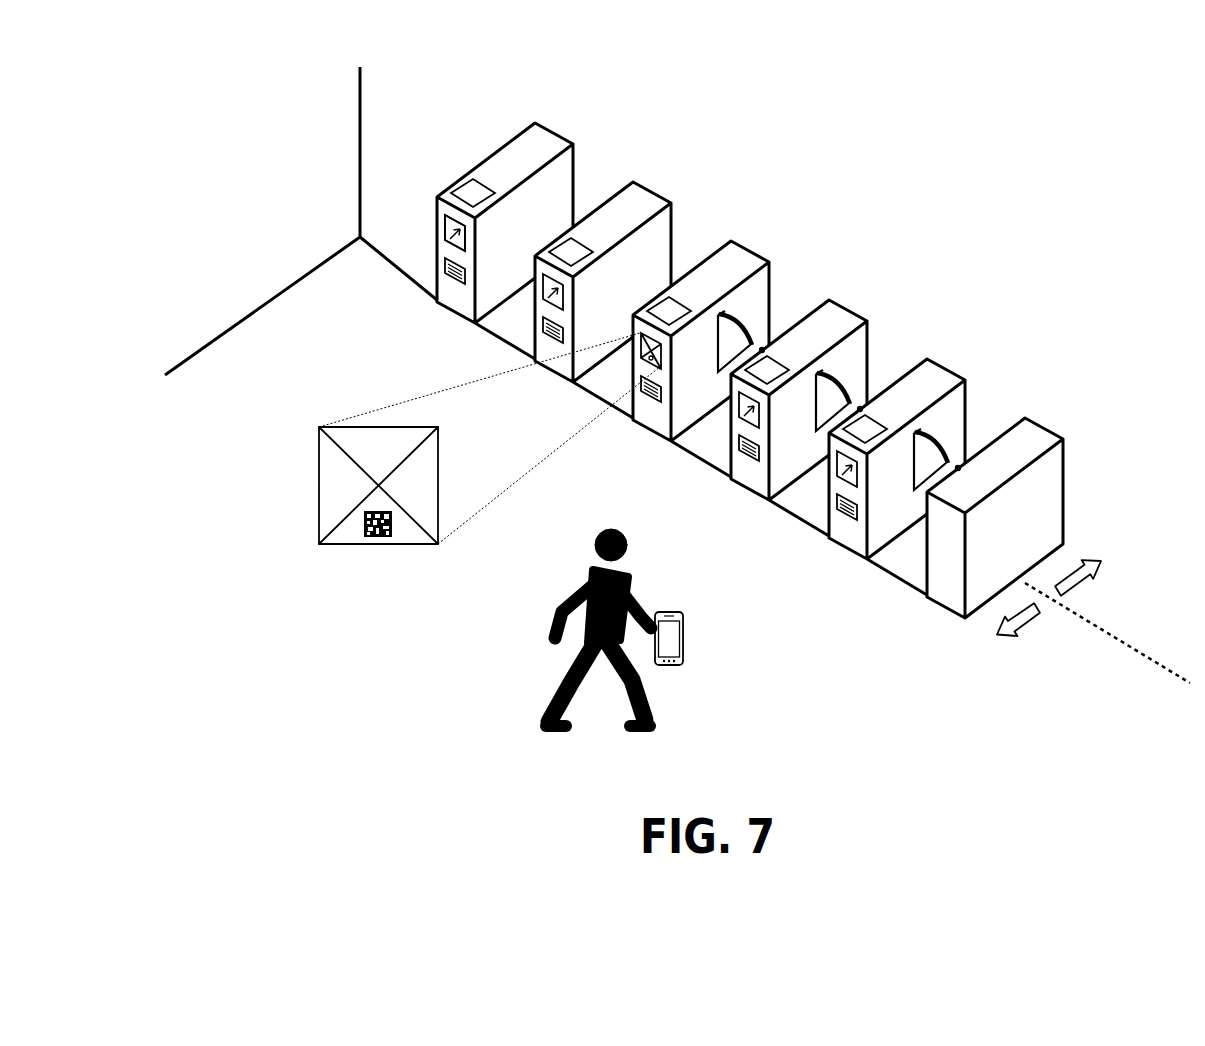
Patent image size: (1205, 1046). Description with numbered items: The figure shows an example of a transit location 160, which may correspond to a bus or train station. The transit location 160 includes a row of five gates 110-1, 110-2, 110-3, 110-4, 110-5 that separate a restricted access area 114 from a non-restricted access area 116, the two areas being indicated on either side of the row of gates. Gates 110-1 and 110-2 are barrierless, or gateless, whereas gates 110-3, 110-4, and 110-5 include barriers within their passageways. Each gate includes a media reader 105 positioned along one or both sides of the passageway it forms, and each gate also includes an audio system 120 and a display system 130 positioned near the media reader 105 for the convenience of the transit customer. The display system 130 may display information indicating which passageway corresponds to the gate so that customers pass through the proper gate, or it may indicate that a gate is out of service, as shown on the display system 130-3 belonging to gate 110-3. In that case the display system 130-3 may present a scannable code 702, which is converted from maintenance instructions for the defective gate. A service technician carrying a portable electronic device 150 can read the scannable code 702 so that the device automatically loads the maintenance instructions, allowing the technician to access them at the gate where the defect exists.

The media reader 105 is at (467, 188).
The gate 110-1 is at (563, 234).
The gate 110-2 is at (665, 293).
The gate 110-3 is at (764, 351).
The gate 110-4 is at (862, 410).
The gate 110-5 is at (961, 469).
The restricted access area 114 is at (1107, 591).
The non-restricted access area 116 is at (1048, 637).
The audio system 120 is at (440, 262).
The display system 130 is at (440, 223).
The display system 130-3 is at (319, 492).
The portable electronic device 150 is at (683, 662).
The transit location 160 is at (158, 736).
The scannable code 702 is at (375, 541).